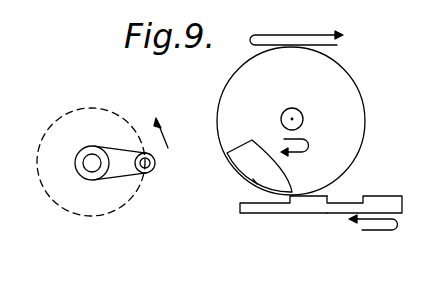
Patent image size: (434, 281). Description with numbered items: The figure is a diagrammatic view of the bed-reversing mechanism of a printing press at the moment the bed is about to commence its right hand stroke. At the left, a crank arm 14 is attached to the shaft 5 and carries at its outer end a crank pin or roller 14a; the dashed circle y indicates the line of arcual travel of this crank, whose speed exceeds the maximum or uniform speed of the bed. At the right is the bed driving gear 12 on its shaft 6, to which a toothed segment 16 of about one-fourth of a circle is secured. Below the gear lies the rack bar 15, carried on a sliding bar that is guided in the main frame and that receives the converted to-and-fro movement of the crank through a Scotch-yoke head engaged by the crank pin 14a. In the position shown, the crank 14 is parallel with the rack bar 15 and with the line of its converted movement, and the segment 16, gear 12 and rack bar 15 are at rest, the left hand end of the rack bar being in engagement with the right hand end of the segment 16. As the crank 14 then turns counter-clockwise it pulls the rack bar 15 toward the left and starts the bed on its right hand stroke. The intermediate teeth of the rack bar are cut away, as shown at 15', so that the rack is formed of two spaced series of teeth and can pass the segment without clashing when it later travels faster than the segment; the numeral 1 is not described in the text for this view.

The crank arm 14 is at (112, 150).
The shaft 5 is at (93, 171).
The crank pin or roller 14a is at (147, 173).
The line of arcual travel of the crank y is at (108, 210).
The bed driving gear 12 is at (352, 78).
The shaft 6 is at (291, 109).
The toothed segment 16 is at (330, 183).
The rack bar 15 is at (368, 189).
The cut-away intermediate teeth of the rack bar 15' is at (288, 226).
The frame 1 is at (428, 227).